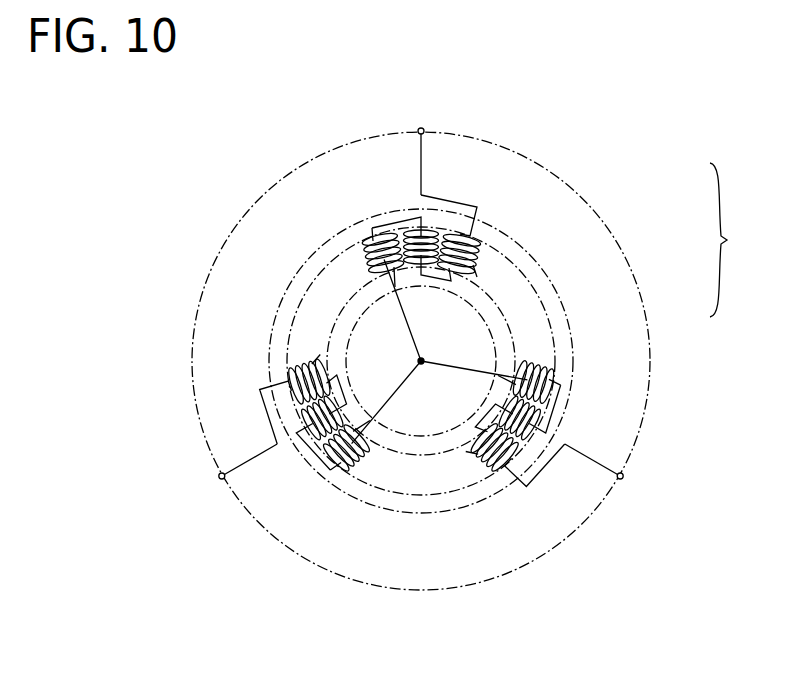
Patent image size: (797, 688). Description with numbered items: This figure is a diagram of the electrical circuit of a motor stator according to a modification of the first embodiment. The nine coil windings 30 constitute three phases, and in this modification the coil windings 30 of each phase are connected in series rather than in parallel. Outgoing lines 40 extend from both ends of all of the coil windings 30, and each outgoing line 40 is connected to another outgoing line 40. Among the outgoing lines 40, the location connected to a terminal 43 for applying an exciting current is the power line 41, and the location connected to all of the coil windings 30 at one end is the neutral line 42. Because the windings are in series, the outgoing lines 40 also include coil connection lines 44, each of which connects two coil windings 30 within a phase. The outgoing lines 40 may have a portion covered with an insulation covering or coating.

The coil winding 30 is at (443, 480).
The outgoing line 40 is at (739, 240).
The power line 41 is at (523, 197).
The neutral line 42 is at (455, 343).
The terminal 43 is at (421, 128).
The coil connection line 44 is at (473, 295).